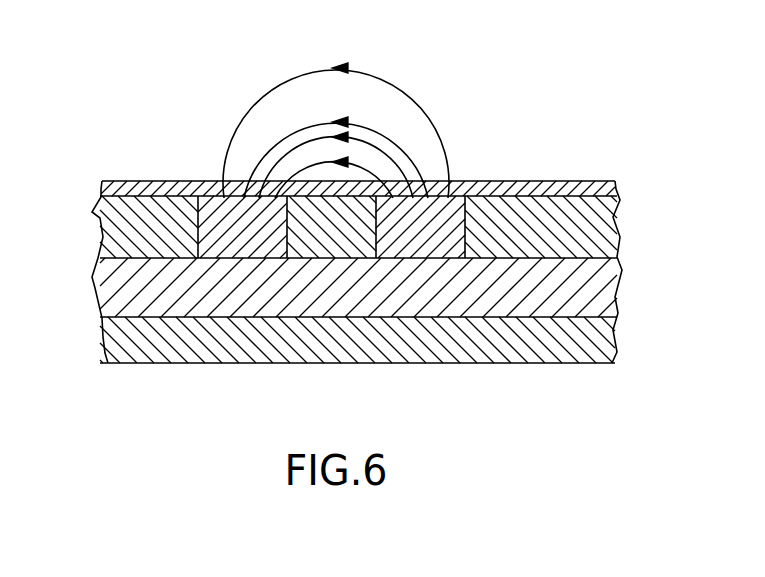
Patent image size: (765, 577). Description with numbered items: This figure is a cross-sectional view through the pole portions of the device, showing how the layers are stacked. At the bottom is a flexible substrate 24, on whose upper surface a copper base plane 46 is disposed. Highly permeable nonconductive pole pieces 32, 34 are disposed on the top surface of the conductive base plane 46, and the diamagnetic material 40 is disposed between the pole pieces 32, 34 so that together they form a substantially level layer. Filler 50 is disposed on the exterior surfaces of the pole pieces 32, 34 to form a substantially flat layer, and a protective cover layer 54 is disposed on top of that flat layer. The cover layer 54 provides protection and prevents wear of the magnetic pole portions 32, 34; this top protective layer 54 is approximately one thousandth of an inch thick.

The flexible substrate 24 is at (495, 350).
The pole piece 32 is at (208, 207).
The pole piece 34 is at (428, 207).
The diamagnetic material 40 is at (337, 205).
The copper base plane 46 is at (608, 285).
The filler 50 is at (102, 213).
The protective cover layer 54 is at (597, 183).